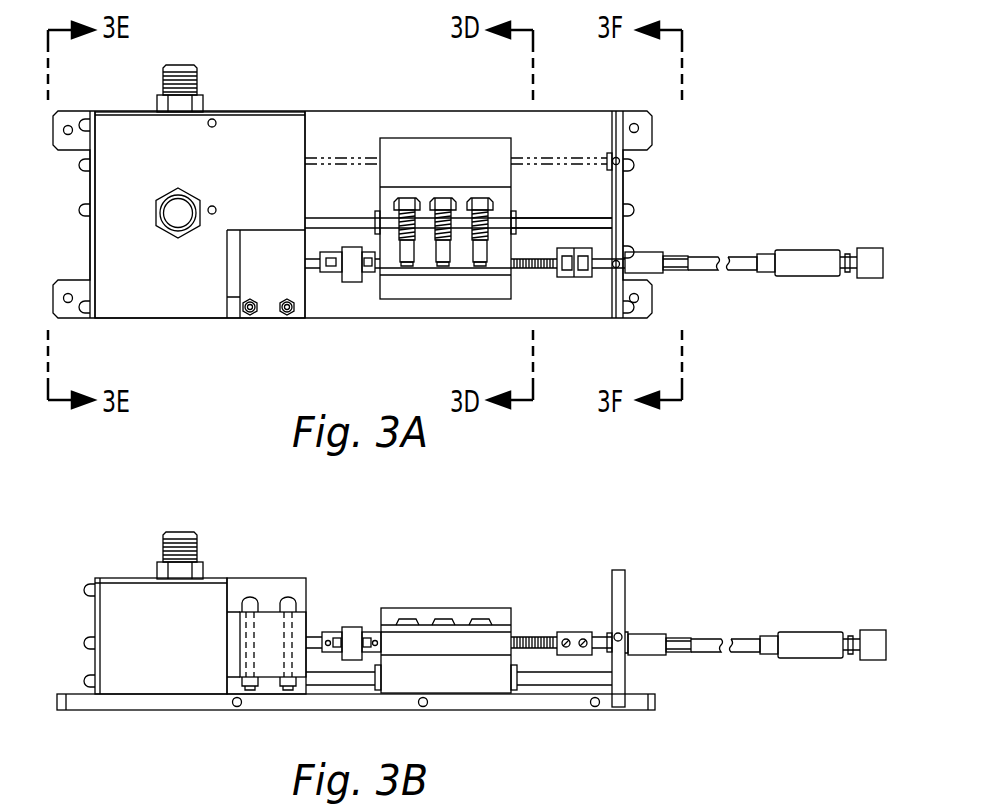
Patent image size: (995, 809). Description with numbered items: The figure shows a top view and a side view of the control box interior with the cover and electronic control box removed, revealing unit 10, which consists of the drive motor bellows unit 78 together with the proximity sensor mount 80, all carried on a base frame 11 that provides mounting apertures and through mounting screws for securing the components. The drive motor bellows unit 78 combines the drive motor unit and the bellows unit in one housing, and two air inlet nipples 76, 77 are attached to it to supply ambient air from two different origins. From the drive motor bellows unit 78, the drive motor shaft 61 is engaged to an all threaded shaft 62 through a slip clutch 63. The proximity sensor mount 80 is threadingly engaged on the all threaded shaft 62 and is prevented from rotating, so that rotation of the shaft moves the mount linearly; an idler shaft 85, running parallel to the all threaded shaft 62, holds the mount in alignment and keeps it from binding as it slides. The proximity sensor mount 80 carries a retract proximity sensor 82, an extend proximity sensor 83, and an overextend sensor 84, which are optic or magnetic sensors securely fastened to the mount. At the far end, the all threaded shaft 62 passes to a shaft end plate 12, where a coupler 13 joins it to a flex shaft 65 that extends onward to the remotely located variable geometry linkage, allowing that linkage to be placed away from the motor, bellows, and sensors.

In FIG. 3A, the unit 10 is at (358, 74).
In FIG. 3B, the unit 10 is at (423, 548).
In FIG. 3B, the base frame 11 is at (178, 712).
In FIG. 3B, the shaft end plate 12 is at (620, 570).
In FIG. 3B, the coupler 13 is at (561, 632).
In FIG. 3A, the drive motor shaft 61 is at (322, 268).
In FIG. 3A, the all threaded shaft 62 is at (540, 272).
In FIG. 3A, the slip clutch 63 is at (351, 283).
In FIG. 3B, the slip clutch 63 is at (350, 627).
In FIG. 3A, the flex shaft 65 is at (810, 250).
In FIG. 3B, the flex shaft 65 is at (800, 632).
In FIG. 3A, the air inlet nipple 76 is at (186, 69).
In FIG. 3A, the air inlet nipple 77 is at (166, 196).
In FIG. 3B, the air inlet nipple 77 is at (186, 534).
In FIG. 3A, the drive motor bellows unit 78 is at (132, 294).
In FIG. 3B, the drive motor bellows unit 78 is at (107, 578).
In FIG. 3B, the proximity sensor mount 80 is at (468, 676).
In FIG. 3A, the retract proximity sensor 82 is at (408, 268).
In FIG. 3A, the extend proximity sensor 83 is at (482, 268).
In FIG. 3A, the overextend sensor 84 is at (445, 268).
In FIG. 3A, the idler shaft 85 is at (597, 218).
In FIG. 3B, the idler shaft 85 is at (575, 686).